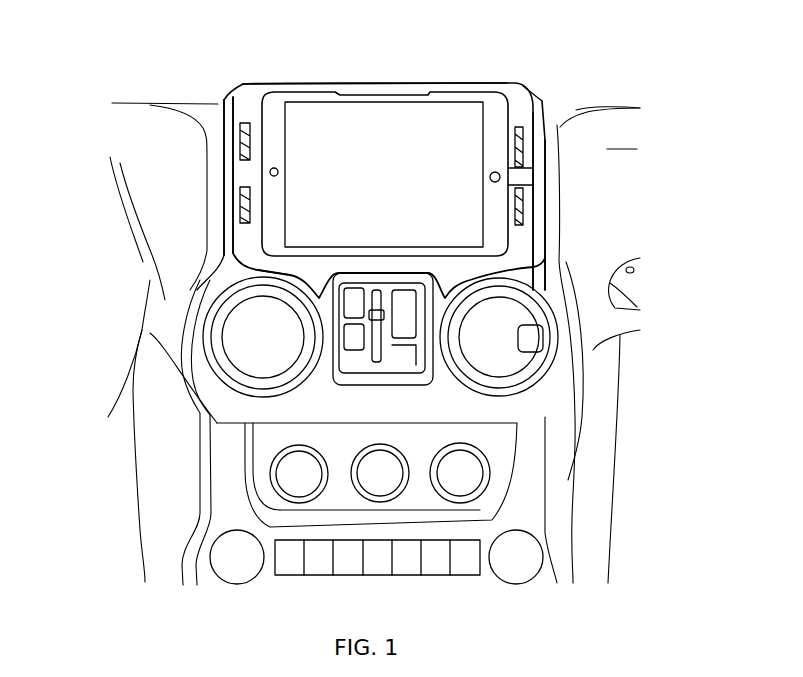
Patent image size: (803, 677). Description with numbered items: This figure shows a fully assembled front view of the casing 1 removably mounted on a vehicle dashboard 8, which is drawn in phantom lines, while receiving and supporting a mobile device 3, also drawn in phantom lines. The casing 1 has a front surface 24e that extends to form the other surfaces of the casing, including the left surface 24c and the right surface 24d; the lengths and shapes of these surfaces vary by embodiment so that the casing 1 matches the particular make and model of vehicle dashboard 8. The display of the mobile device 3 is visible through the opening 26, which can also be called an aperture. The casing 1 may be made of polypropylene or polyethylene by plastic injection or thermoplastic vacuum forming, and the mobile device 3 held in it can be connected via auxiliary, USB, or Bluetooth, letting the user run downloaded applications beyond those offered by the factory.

The casing 1 is at (520, 82).
The mobile device 3 is at (313, 120).
The dashboard 8 is at (556, 348).
The left surface 24c is at (222, 103).
The right surface 24d is at (537, 117).
The front surface 24e is at (380, 98).
The opening 26 is at (455, 206).